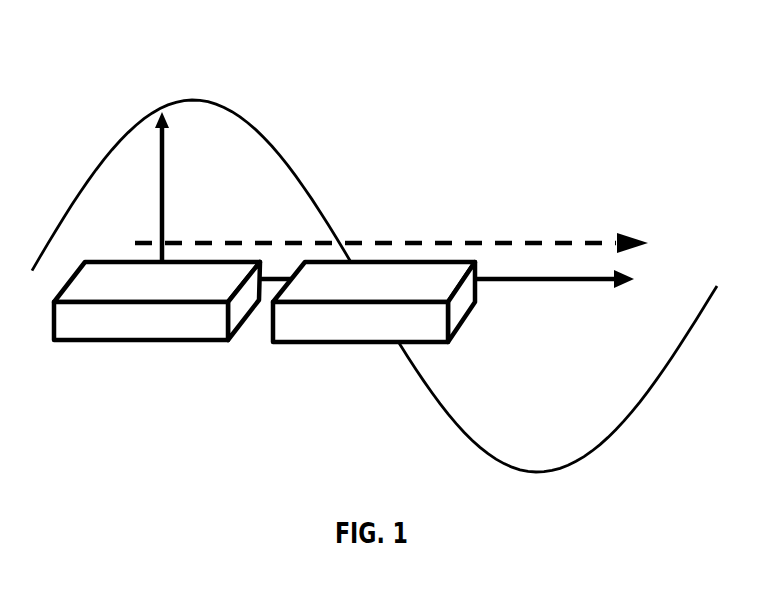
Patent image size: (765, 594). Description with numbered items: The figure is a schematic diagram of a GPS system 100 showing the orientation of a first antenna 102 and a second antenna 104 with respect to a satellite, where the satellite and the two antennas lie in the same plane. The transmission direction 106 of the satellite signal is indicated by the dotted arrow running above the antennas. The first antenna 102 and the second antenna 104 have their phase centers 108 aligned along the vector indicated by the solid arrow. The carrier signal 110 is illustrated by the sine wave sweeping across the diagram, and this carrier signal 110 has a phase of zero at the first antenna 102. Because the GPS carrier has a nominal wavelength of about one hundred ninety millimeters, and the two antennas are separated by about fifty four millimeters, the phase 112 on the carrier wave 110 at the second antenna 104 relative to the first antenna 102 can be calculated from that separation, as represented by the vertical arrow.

The GPS system 100 is at (556, 95).
The first antenna 102 is at (333, 345).
The second antenna 104 is at (112, 343).
The transmission direction 106 is at (475, 243).
The phase centers 108 is at (567, 280).
The carrier signal 110 is at (232, 108).
The phase 112 is at (165, 195).